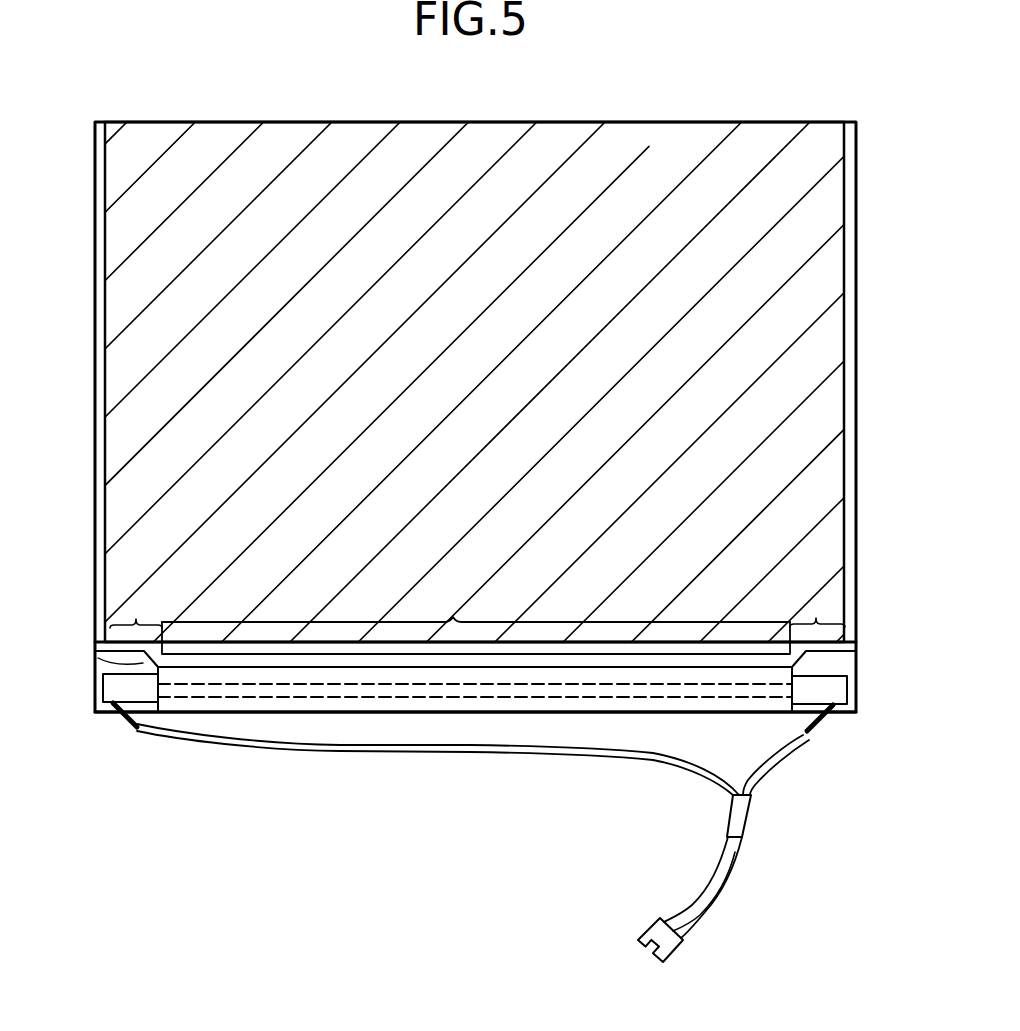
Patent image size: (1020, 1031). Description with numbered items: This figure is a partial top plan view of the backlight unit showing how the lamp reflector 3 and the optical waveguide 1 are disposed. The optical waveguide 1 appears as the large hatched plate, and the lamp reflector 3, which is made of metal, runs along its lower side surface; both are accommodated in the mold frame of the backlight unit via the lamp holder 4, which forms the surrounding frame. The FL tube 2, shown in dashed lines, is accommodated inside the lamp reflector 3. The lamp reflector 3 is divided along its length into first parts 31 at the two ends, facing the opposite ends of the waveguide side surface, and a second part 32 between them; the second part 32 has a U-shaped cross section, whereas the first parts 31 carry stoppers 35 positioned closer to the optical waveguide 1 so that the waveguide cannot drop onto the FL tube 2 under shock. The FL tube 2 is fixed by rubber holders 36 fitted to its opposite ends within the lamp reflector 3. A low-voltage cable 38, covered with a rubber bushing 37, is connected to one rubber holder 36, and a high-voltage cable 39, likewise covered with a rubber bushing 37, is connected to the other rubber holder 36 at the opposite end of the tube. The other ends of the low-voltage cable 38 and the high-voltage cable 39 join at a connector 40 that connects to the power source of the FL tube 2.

The optical waveguide 1 is at (716, 136).
The FL tube 2 is at (257, 696).
The lamp reflector 3 is at (357, 713).
The lamp holder 4 is at (850, 491).
The first parts 31 is at (477, 609).
The second part 32 is at (476, 621).
The stoppers 35 is at (118, 666).
The rubber holders 36 is at (103, 690).
The rubber bushing 37 is at (122, 728).
The low-voltage cable 38 is at (415, 754).
The high-voltage cable 39 is at (782, 757).
The connector 40 is at (678, 948).